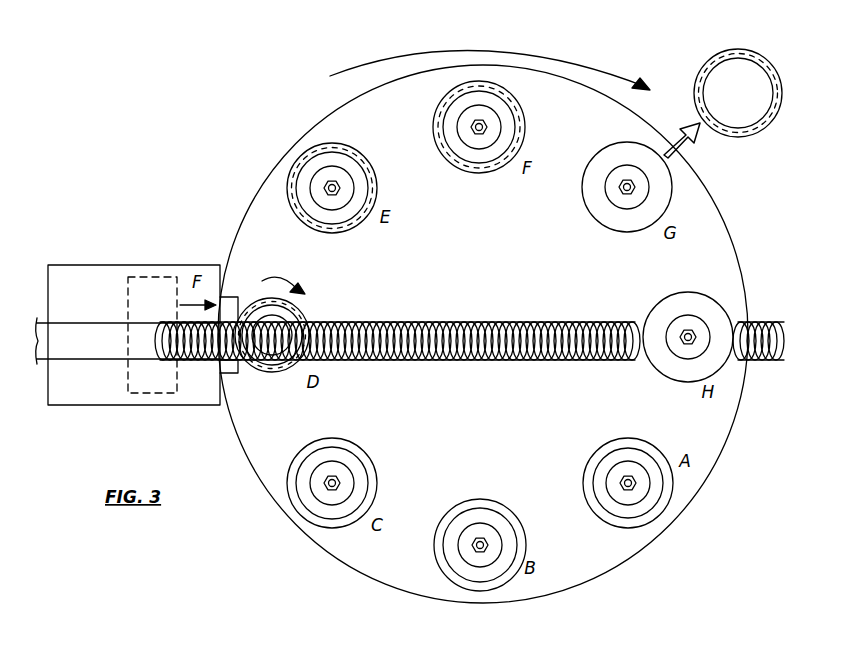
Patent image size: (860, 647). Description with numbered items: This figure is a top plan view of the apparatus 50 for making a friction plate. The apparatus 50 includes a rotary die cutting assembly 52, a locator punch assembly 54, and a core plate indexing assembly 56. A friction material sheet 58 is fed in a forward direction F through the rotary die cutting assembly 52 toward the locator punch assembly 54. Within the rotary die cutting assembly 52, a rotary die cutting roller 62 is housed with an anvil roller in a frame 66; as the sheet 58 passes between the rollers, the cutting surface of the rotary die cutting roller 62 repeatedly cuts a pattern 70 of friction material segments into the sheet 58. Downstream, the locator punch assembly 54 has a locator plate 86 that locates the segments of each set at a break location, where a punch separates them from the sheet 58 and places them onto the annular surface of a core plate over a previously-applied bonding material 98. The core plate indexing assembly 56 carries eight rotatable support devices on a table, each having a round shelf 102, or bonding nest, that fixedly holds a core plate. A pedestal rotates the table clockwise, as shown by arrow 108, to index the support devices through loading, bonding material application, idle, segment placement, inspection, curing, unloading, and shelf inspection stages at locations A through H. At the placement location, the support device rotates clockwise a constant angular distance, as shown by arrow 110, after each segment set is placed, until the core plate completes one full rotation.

The apparatus 50 is at (205, 121).
The rotary die cutting assembly 52 is at (179, 240).
The locator punch assembly 54 is at (236, 392).
The core plate indexing assembly 56 is at (298, 570).
The friction material sheet 58 is at (82, 336).
The rotary die cutting roller 62 is at (143, 374).
The frame 66 is at (76, 265).
The pattern 70 is at (203, 366).
The locator plate 86 is at (229, 297).
The bonding material 98 is at (281, 375).
The round shelf 102 is at (288, 313).
The arrow 108 is at (450, 38).
The arrow 110 is at (285, 278).